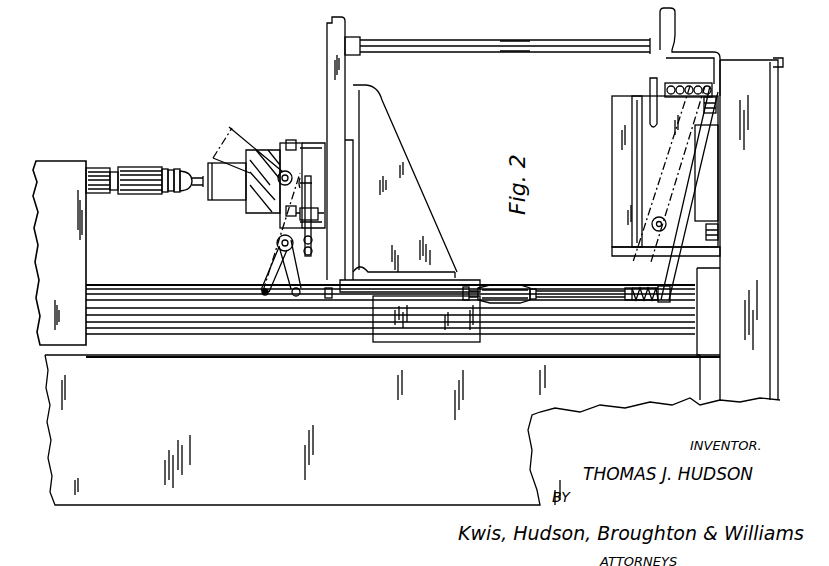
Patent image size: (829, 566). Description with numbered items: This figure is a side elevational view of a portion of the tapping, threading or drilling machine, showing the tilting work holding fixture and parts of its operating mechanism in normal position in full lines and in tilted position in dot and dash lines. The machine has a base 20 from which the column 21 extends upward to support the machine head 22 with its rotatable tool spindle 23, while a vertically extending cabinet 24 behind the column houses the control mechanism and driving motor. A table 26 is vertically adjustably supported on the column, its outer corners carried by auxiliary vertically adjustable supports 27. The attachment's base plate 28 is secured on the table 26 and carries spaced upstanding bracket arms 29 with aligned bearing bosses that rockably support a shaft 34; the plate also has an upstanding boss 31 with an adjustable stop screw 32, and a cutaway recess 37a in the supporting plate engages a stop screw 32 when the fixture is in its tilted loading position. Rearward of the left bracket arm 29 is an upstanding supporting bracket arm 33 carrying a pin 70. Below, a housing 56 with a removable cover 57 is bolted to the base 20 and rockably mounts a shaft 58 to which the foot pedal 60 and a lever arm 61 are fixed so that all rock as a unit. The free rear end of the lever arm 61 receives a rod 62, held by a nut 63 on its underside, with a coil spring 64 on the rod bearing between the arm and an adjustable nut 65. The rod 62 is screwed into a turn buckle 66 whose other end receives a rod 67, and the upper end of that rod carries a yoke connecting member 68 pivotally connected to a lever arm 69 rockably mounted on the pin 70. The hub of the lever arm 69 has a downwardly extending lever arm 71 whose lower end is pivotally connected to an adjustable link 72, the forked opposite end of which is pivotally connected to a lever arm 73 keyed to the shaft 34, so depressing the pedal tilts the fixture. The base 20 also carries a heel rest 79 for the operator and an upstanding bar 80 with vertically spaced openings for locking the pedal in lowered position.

The base 20 is at (757, 162).
The column 21 is at (200, 285).
The machine head 22 is at (68, 162).
The tool spindle 23 is at (146, 168).
The cabinet 24 is at (266, 505).
The table 26 is at (318, 20).
The auxiliary vertically adjustable supports 27 is at (525, 38).
The base plate 28 is at (340, 140).
The bracket arms 29 is at (353, 150).
The boss 31 is at (312, 142).
The stop screws 32 is at (298, 142).
The supporting bracket arm 33 is at (292, 228).
The shaft 34 is at (270, 150).
The cutaway recess 37a is at (282, 148).
The housing 56 is at (647, 135).
The cover 57 is at (616, 168).
The shaft 58 is at (652, 224).
The foot pedal 60 is at (658, 167).
The lever arm 61 is at (660, 262).
The rod 62 is at (590, 290).
The nut 63 is at (666, 303).
The coil spring 64 is at (642, 301).
The adjustable nut 65 is at (627, 288).
The turn buckle 66 is at (502, 287).
The rod 67 is at (428, 294).
The yoke connecting member 68 is at (328, 298).
The lever arm 69 is at (277, 262).
The pin 70 is at (283, 240).
The lever arm 71 is at (297, 262).
The adjustable link 72 is at (312, 216).
The lever arm 73 is at (313, 184).
The heel rest 79 is at (698, 52).
The upstanding bar 80 is at (690, 84).